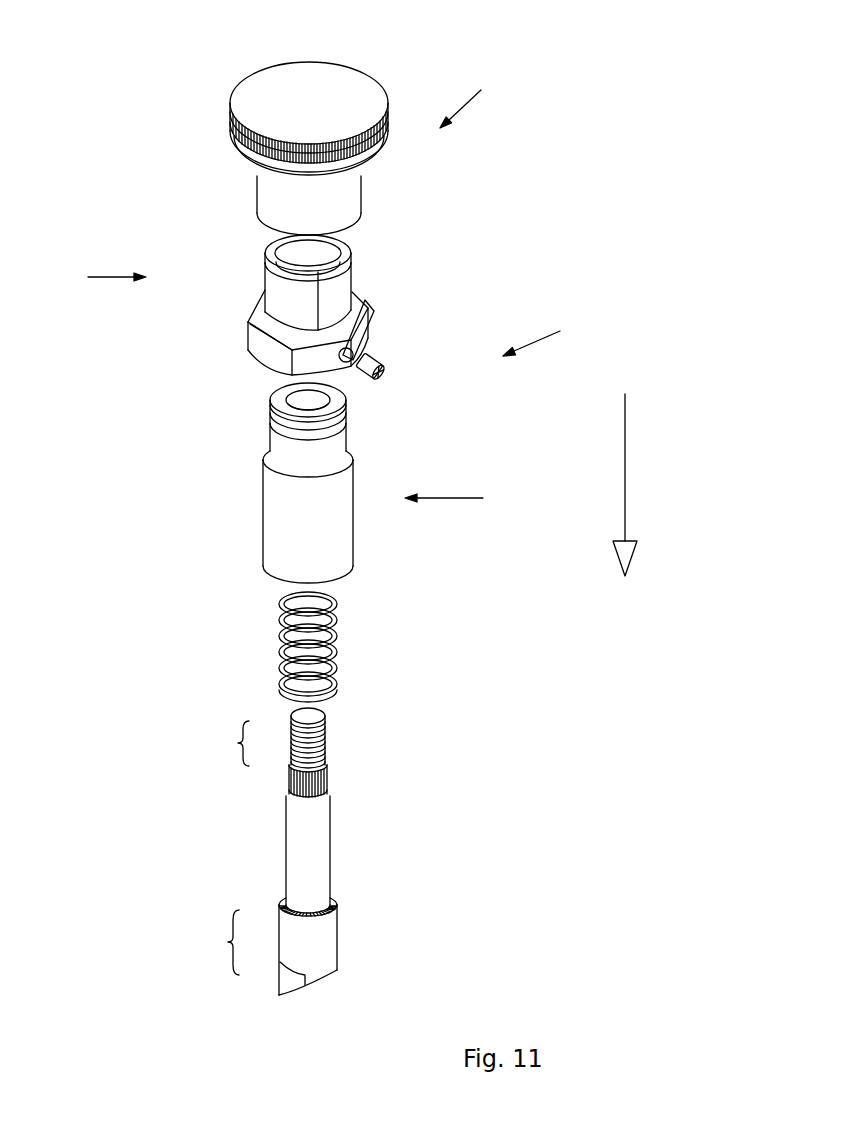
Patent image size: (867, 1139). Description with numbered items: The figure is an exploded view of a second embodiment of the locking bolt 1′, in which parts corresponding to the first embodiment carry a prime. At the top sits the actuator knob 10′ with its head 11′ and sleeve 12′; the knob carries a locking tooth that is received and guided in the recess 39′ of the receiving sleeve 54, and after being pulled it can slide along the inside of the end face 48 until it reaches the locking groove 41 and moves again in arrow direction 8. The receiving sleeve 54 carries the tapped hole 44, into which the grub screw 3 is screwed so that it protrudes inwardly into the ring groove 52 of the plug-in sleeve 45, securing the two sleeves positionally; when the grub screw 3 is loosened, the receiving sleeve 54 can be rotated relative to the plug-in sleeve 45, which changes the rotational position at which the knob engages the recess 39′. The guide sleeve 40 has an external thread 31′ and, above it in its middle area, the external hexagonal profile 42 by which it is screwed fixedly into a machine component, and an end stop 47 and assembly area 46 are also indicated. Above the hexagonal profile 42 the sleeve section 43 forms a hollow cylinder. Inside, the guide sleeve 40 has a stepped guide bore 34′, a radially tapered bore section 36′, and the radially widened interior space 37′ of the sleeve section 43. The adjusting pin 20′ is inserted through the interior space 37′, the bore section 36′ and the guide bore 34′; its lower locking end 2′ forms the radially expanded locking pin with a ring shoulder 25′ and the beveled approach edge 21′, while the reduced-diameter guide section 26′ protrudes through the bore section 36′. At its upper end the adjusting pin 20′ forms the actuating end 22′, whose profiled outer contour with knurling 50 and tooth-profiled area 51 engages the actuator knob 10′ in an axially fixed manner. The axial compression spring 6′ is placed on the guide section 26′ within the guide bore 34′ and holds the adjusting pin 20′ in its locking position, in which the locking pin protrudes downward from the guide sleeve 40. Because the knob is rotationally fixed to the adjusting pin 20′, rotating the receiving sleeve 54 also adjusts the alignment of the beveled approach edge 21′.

The actuator knob 10′ is at (365, 92).
The head 11′ is at (230, 122).
The sleeve 12′ is at (350, 193).
The locking bolt 1′ is at (474, 106).
The end face 48 is at (350, 253).
The interior space 37′ is at (292, 253).
The locking groove 41 is at (268, 265).
The recess 39′ is at (338, 288).
The sleeve section 43 is at (352, 287).
The external hexagonal profile 42 is at (270, 353).
The end stop 47 is at (262, 317).
The tapped hole 44 is at (365, 345).
The grub screw 3 is at (383, 367).
The guide sleeve 40 is at (547, 338).
The receiving sleeve 54 is at (103, 276).
The assembly area 46 is at (268, 443).
The guide bore 34′ is at (312, 400).
The bore section 36′ is at (308, 407).
The ring groove 52 is at (335, 432).
The external thread 31′ is at (267, 522).
The plug-in sleeve 45 is at (460, 504).
The arrow direction 8 is at (627, 474).
The axial compression spring 6′ is at (335, 651).
The actuating end 22′ is at (225, 743).
The tooth-profiled area 51 is at (326, 737).
The knurling 50 is at (326, 779).
The guide section 26′ is at (318, 837).
The adjusting pin 20′ is at (350, 868).
The locking end 2′ is at (219, 942).
The ring shoulder 25′ is at (327, 950).
The beveled approach edge 21′ is at (312, 983).